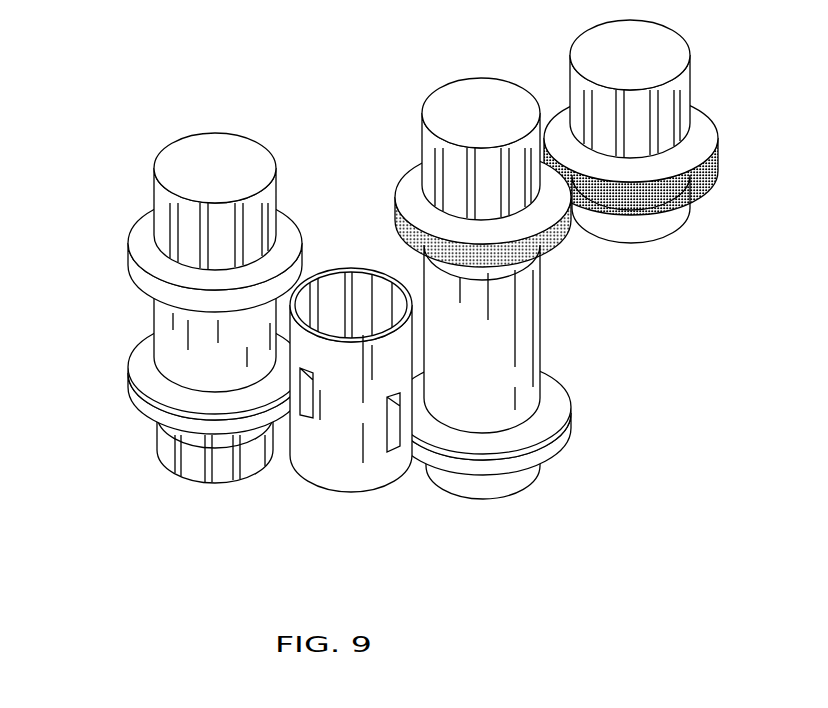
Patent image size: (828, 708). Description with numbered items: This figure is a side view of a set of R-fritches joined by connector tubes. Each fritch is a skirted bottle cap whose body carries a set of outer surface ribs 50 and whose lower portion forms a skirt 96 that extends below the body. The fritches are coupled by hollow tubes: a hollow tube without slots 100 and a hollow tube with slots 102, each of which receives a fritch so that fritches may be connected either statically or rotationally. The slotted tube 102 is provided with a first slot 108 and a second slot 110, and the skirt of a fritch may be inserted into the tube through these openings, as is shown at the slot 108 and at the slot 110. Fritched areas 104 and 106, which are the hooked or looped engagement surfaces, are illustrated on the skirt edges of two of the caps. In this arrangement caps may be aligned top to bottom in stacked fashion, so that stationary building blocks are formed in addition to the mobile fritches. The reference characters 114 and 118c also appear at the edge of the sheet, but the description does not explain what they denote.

The cap 50 is at (277, 195).
The washer 96 is at (140, 274).
The body 100 is at (170, 342).
The sleeve 102 is at (374, 420).
The friction washer 104 is at (395, 232).
The friction washer 106 is at (718, 172).
The slot 108 is at (300, 416).
The slot 110 is at (393, 451).
The member 114 is at (794, 614).
The member 118c is at (827, 457).